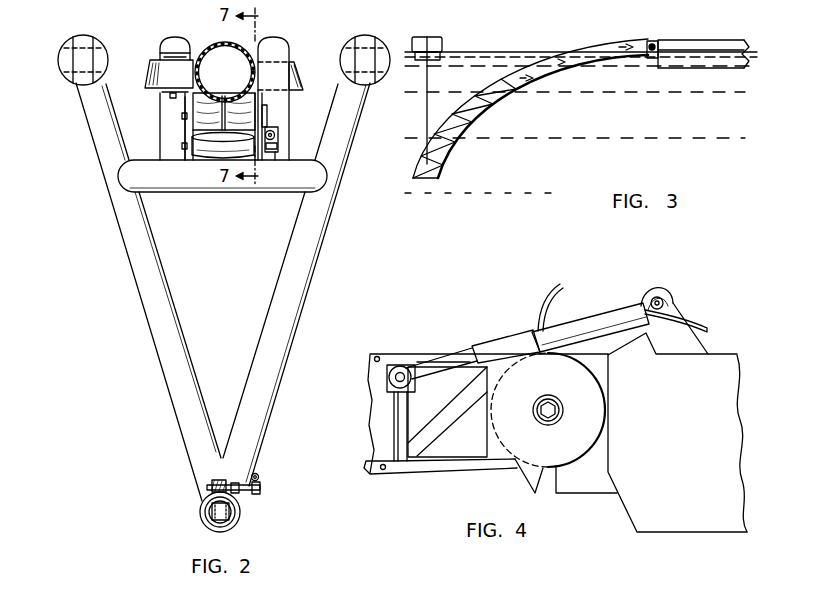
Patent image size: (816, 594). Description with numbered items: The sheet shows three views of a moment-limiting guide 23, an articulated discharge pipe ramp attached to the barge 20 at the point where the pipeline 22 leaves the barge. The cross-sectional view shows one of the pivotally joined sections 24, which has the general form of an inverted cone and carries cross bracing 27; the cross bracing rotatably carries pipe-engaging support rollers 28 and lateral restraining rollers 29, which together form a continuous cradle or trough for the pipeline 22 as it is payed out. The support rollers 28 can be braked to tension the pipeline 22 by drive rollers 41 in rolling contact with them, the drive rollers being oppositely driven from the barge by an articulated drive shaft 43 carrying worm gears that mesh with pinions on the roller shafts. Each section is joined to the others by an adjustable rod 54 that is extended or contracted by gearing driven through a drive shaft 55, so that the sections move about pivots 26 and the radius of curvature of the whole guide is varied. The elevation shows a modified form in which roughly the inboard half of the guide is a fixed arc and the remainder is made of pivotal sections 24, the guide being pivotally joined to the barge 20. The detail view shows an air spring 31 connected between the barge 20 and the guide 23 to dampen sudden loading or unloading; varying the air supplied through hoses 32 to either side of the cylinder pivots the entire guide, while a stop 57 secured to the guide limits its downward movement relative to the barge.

In FIG. 3, the barge 20 is at (683, 41).
In FIG. 4, the barge 20 is at (706, 368).
In FIG. 2, the pipeline 22 is at (221, 42).
In FIG. 3, the moment-limiting guide 23 is at (562, 76).
In FIG. 4, the moment-limiting guide 23 is at (402, 480).
In FIG. 3, the sections 24 is at (506, 74).
In FIG. 2, the pivots 26 is at (70, 52).
In FIG. 2, the cross bracing 27 is at (241, 190).
In FIG. 2, the support rollers 28 is at (193, 102).
In FIG. 2, the lateral restraining rollers 29 is at (150, 68).
In FIG. 4, the air spring 31 is at (596, 311).
In FIG. 4, the hoses 32 is at (540, 296).
In FIG. 2, the drive rollers 41 is at (192, 142).
In FIG. 2, the articulated drive shaft 43 is at (273, 130).
In FIG. 2, the adjustable rod 54 is at (242, 513).
In FIG. 2, the drive shaft 55 is at (262, 476).
In FIG. 4, the stop 57 is at (521, 480).